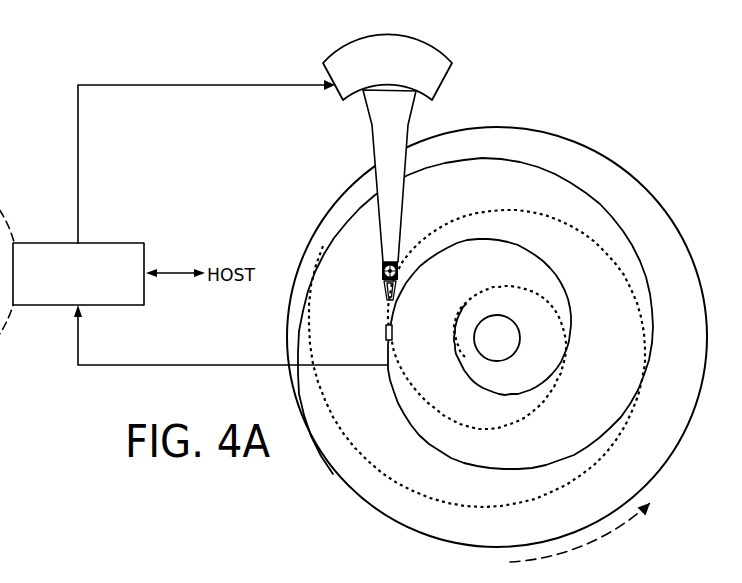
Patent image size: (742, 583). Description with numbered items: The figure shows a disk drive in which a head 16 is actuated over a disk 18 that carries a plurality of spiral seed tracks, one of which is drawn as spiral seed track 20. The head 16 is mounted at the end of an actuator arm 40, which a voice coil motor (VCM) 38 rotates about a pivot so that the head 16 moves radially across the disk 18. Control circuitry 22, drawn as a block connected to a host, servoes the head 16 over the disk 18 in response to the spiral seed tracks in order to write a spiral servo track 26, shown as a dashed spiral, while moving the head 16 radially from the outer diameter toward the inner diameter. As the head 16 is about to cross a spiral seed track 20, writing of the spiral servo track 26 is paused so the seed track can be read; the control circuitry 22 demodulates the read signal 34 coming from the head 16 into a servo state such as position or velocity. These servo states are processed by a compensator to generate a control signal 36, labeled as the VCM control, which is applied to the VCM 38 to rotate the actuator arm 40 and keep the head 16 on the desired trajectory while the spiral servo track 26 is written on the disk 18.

The head 16 is at (376, 340).
The disk 18 is at (630, 160).
The spiral seed track 20 is at (345, 228).
The control circuitry 22 is at (112, 243).
The spiral servo track 26 is at (474, 196).
The read signal 34 is at (199, 366).
The control signal 36 is at (78, 153).
The voice coil motor (VCM) 38 is at (344, 98).
The actuator arm 40 is at (371, 147).